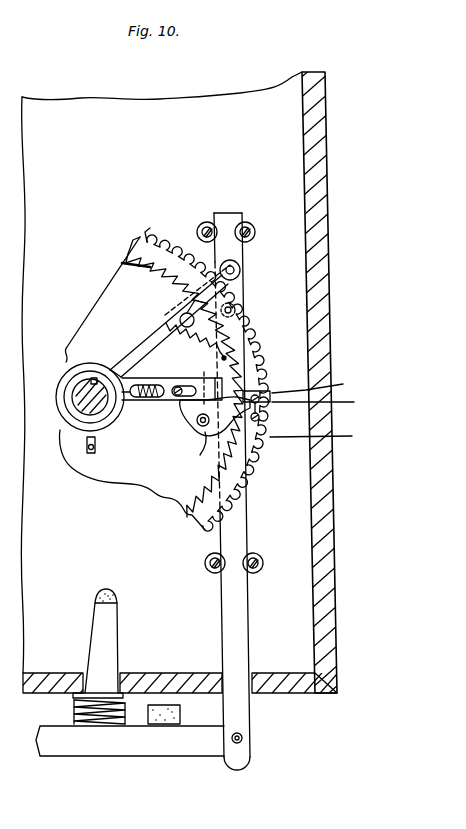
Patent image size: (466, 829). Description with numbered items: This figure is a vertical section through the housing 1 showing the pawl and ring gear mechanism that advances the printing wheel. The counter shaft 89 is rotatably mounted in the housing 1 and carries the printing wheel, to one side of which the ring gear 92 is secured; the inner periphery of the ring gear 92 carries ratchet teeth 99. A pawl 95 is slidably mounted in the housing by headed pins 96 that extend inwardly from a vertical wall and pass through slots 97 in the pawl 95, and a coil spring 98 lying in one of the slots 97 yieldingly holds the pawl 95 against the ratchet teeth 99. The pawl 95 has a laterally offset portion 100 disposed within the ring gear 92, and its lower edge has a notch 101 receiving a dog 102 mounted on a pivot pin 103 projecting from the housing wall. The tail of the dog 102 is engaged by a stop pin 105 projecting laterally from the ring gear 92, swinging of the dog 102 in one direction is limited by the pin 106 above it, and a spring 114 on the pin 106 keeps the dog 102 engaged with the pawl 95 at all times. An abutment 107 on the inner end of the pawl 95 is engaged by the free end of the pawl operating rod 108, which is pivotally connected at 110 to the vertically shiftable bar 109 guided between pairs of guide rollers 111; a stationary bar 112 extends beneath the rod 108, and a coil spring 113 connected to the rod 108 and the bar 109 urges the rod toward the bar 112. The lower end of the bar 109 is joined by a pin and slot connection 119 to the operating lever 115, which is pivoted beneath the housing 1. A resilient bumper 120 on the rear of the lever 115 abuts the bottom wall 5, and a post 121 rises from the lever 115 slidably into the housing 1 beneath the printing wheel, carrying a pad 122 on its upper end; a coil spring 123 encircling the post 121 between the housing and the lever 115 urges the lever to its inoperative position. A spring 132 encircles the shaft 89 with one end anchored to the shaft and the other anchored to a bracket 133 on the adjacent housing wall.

The housing 1 is at (330, 179).
The bottom wall 5 is at (297, 686).
The counter shaft 89 is at (82, 399).
The ring gear 92 is at (157, 250).
The pawl 95 is at (152, 402).
The headed pins 96 is at (143, 384).
The slots 97 is at (185, 386).
The coil spring 98 is at (146, 400).
The ratchet teeth 99 is at (150, 263).
The laterally offset portion 100 is at (228, 383).
The notch 101 is at (268, 388).
The dog 102 is at (194, 421).
The pivot pin 103 is at (208, 440).
The stop pin 105 is at (323, 439).
The pin 106 is at (327, 404).
The abutment 107 is at (138, 358).
The pawl operating rod 108 is at (168, 330).
The vertically shiftable bar 109 is at (235, 619).
The pivotal connection 110 is at (241, 270).
The guide rollers 111 is at (207, 220).
The stationary bar 112 is at (182, 307).
The coil spring 113 is at (190, 346).
The spring 114 is at (384, 393).
The operating lever 115 is at (90, 745).
The pin and slot connection 119 is at (244, 740).
The resilient bumper 120 is at (165, 716).
The post 121 is at (100, 630).
The pad 122 is at (115, 575).
The coil spring 123 is at (72, 714).
The spring 132 is at (73, 358).
The bracket 133 is at (84, 448).